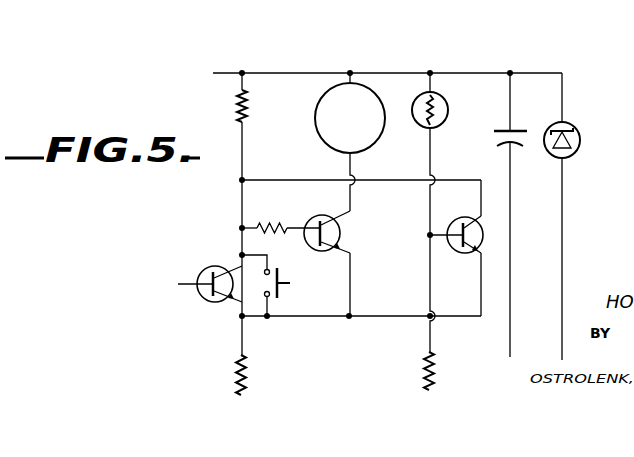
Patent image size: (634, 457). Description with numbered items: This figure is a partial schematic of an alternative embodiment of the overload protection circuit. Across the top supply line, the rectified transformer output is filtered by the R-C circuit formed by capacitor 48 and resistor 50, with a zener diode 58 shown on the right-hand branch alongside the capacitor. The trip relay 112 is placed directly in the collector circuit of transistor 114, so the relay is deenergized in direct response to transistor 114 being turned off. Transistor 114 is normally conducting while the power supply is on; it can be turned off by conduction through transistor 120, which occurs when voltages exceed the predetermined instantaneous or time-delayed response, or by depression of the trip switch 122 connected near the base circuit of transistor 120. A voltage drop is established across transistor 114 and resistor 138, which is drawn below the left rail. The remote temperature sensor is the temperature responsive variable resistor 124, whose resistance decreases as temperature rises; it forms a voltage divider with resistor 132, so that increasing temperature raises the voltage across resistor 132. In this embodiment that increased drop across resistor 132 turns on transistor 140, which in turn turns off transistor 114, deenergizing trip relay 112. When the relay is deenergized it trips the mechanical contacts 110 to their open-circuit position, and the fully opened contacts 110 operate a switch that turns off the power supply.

The capacitor 48 is at (493, 138).
The resistor 50 is at (250, 104).
The zener diode 58 is at (583, 143).
The mechanical contacts 110 is at (184, 48).
The trip relay 112 is at (326, 142).
The transistor 114 is at (323, 206).
The transistor 120 is at (222, 256).
The trip switch 122 is at (275, 268).
The temperature responsive variable resistor 124 is at (447, 104).
The resistor 132 is at (420, 366).
The resistor 138 is at (250, 374).
The transistor 140 is at (470, 207).